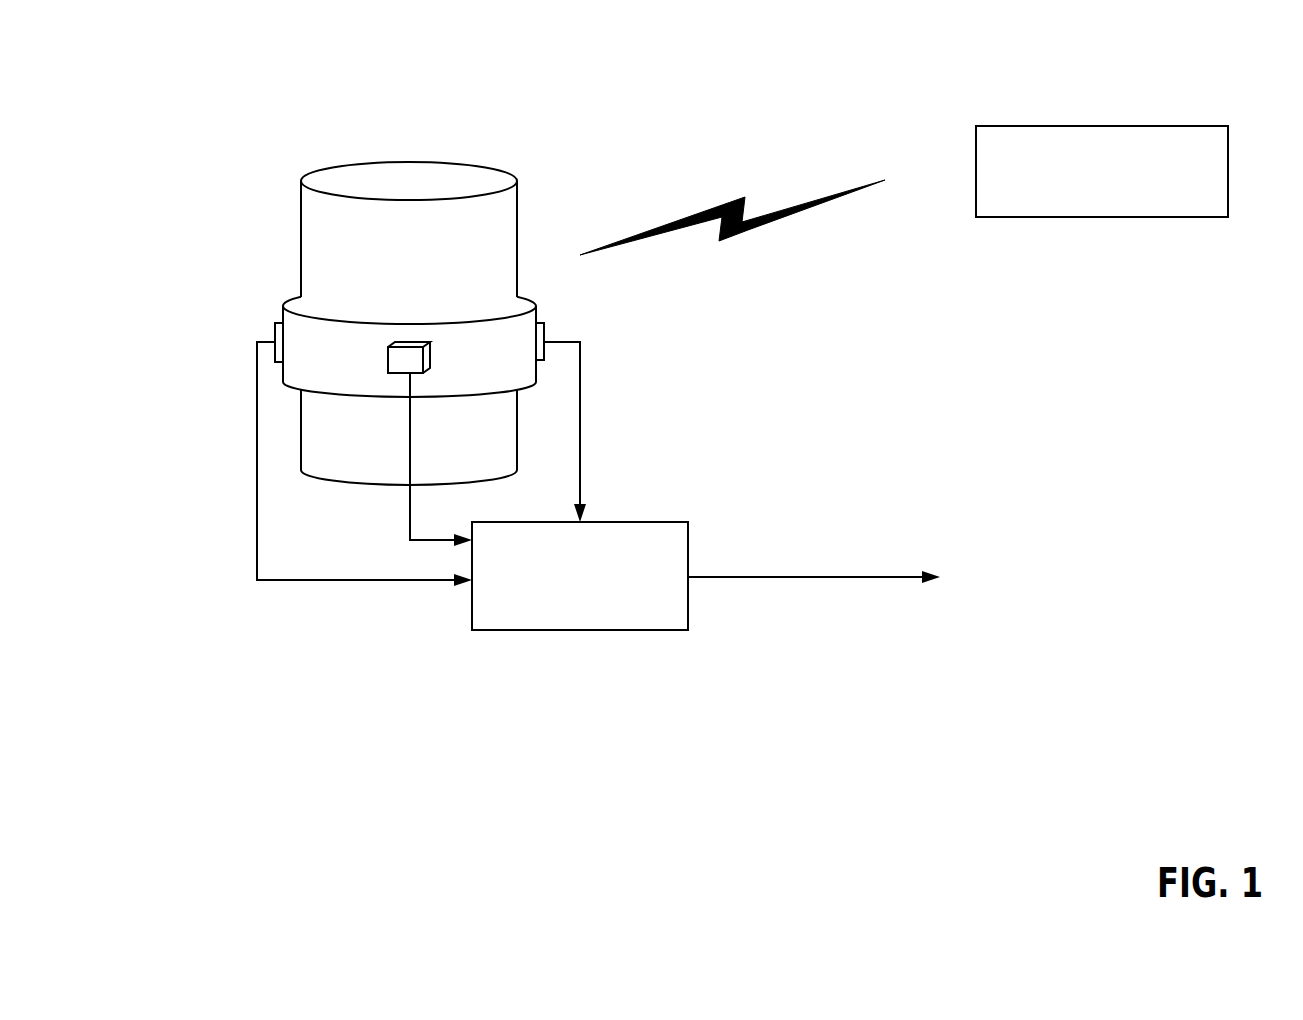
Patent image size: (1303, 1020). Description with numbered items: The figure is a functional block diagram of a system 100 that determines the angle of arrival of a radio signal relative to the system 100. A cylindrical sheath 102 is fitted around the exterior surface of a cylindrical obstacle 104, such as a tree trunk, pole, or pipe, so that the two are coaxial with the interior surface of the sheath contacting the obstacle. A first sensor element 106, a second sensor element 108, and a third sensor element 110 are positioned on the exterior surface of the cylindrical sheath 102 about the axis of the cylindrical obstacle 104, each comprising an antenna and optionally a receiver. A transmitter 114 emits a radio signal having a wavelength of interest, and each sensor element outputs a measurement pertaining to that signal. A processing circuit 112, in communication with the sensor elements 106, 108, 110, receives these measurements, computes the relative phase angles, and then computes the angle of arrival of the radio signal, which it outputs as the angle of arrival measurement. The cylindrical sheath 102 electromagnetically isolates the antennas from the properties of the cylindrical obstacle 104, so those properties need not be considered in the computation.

The system 100 is at (641, 63).
The cylindrical sheath 102 is at (514, 368).
The cylindrical obstacle 104 is at (427, 263).
The first sensor element 106 is at (275, 323).
The second sensor element 108 is at (398, 373).
The third sensor element 110 is at (544, 323).
The processing circuit 112 is at (617, 522).
The transmitter 114 is at (1083, 126).